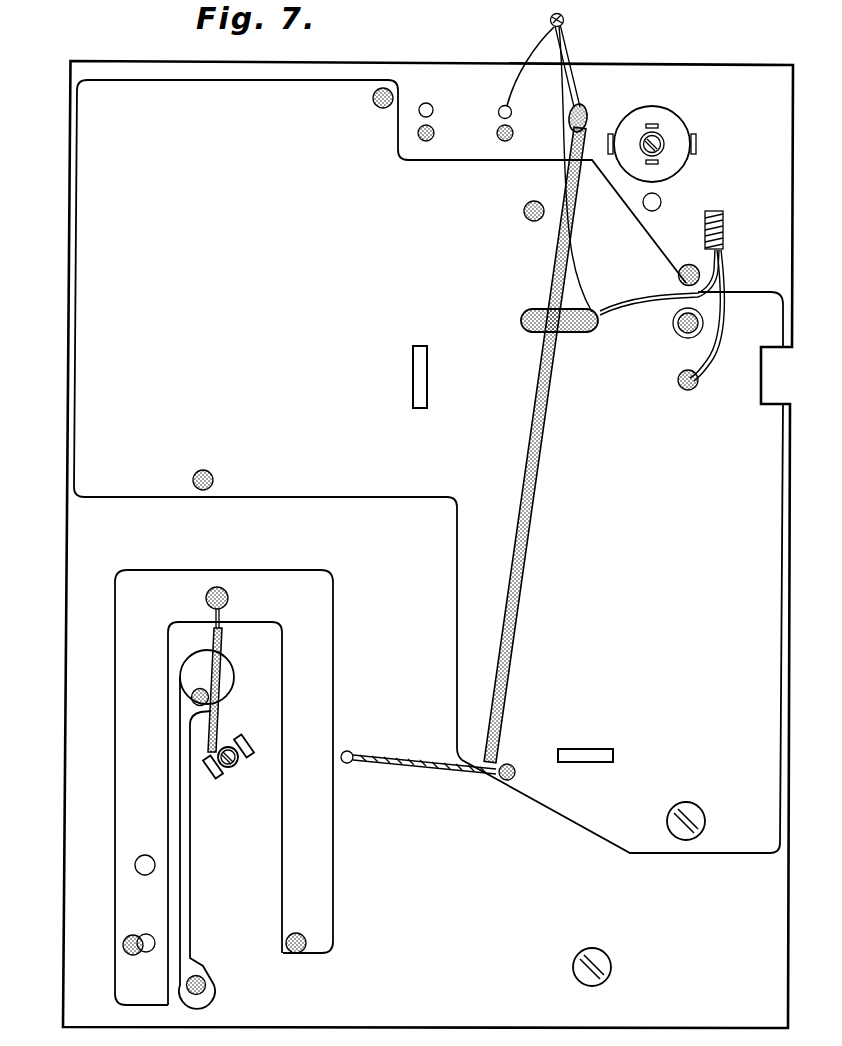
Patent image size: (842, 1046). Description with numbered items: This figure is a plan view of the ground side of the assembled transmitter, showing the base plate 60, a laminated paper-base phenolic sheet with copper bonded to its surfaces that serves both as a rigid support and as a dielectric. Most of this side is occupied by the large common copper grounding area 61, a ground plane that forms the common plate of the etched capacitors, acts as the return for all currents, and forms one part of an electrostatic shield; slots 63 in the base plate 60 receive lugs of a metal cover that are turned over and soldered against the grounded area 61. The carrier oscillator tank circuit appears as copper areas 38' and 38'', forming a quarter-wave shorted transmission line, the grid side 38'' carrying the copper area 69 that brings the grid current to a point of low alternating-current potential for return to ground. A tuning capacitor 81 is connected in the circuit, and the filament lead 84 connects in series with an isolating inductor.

The base plate 60 is at (70, 521).
The common copper grounding area 61 is at (250, 379).
The slots 63 is at (418, 375).
The copper area 38' is at (340, 922).
The grid side of the resonant line 38'' is at (178, 787).
The copper area 69 is at (190, 891).
The tuning capacitor 81 is at (236, 773).
The filament lead 84 is at (514, 622).